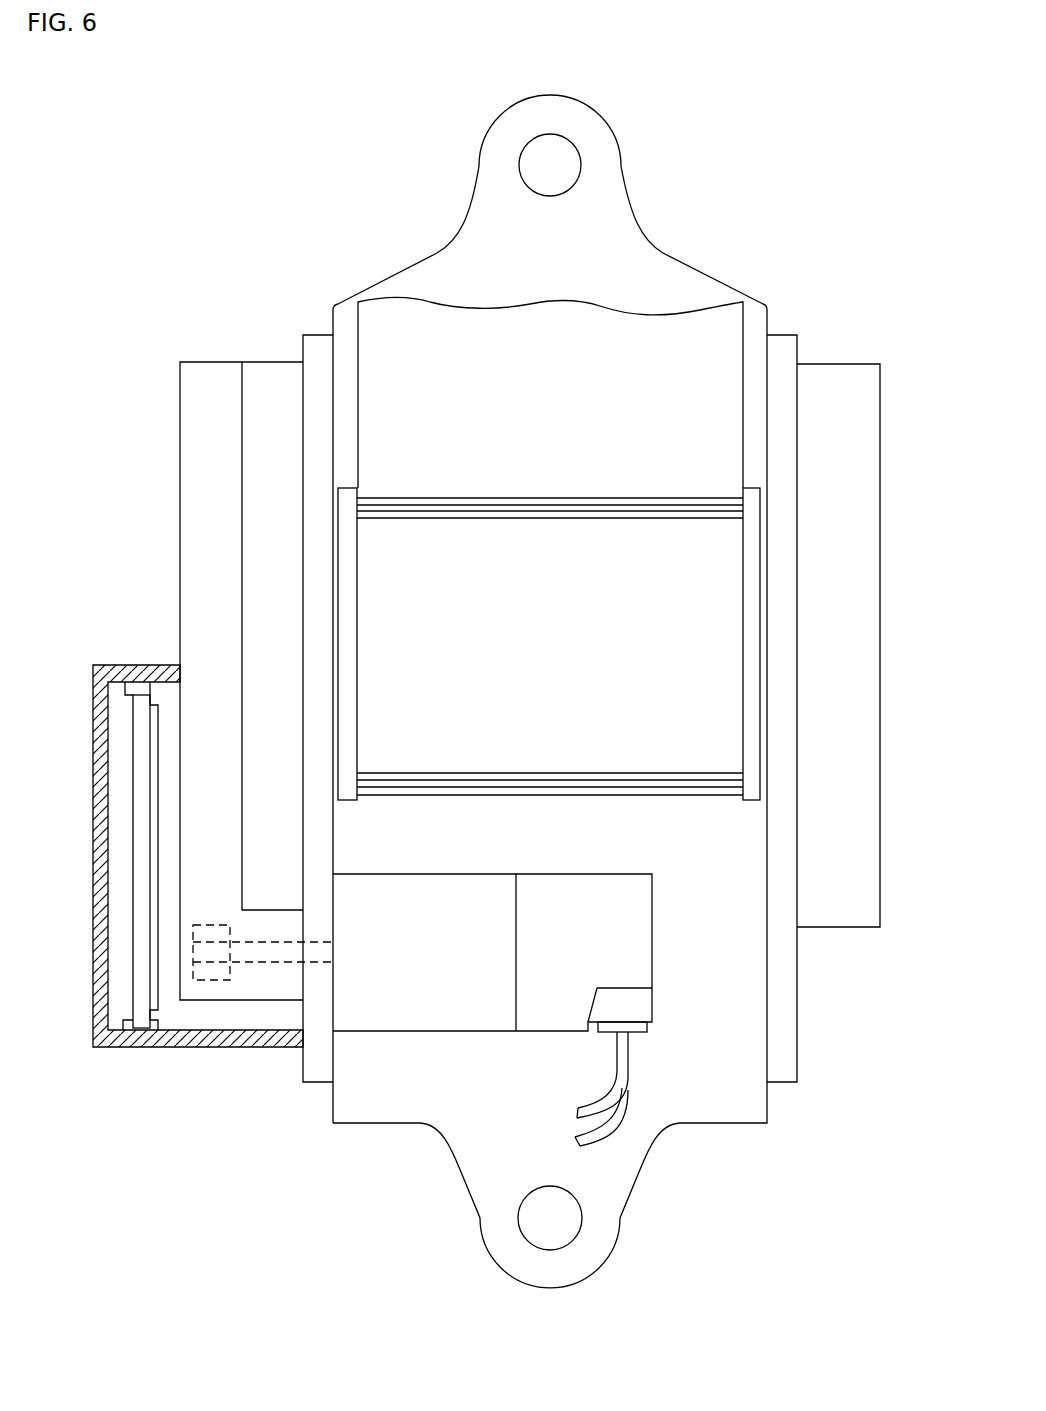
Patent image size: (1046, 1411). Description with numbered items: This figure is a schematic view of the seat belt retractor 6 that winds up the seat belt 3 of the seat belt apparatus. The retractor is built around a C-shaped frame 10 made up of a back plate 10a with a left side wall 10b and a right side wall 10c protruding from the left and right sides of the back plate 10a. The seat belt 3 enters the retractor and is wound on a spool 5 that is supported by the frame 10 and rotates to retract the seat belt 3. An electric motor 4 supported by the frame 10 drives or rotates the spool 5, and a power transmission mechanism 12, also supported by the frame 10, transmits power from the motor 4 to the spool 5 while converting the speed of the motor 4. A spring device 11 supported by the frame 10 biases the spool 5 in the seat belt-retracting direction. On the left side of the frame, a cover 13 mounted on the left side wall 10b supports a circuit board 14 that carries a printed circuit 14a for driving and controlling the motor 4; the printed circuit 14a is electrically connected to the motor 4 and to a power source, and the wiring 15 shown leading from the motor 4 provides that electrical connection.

The seat belt retractor 6 is at (305, 292).
The frame 10 is at (675, 280).
The back plate 10a is at (457, 1085).
The left side wall 10b is at (318, 1043).
The right side wall 10c is at (787, 1043).
The seat belt 3 is at (598, 327).
The spool 5 is at (565, 664).
The electric motor 4 is at (660, 983).
The wires 15 is at (600, 1082).
The spring device 11 is at (272, 368).
The power transmission mechanism 12 is at (208, 368).
The cover 13 is at (190, 1035).
The circuit board 14 is at (142, 980).
The printed circuit 14a is at (153, 737).